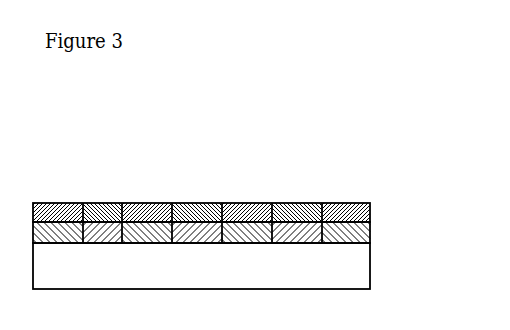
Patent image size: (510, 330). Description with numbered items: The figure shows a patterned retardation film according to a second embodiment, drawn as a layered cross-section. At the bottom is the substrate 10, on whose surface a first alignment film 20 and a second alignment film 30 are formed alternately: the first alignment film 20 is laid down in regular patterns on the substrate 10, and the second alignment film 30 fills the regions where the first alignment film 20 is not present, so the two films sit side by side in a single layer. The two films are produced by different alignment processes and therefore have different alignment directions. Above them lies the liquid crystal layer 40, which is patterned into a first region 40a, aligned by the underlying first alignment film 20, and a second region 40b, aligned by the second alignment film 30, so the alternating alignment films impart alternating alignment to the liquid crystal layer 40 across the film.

The substrate 10 is at (363, 270).
The first alignment film 20 is at (370, 233).
The second alignment film 30 is at (298, 207).
The liquid crystal layer 40 is at (201, 146).
The first region 40a is at (53, 203).
The second region 40b is at (202, 185).